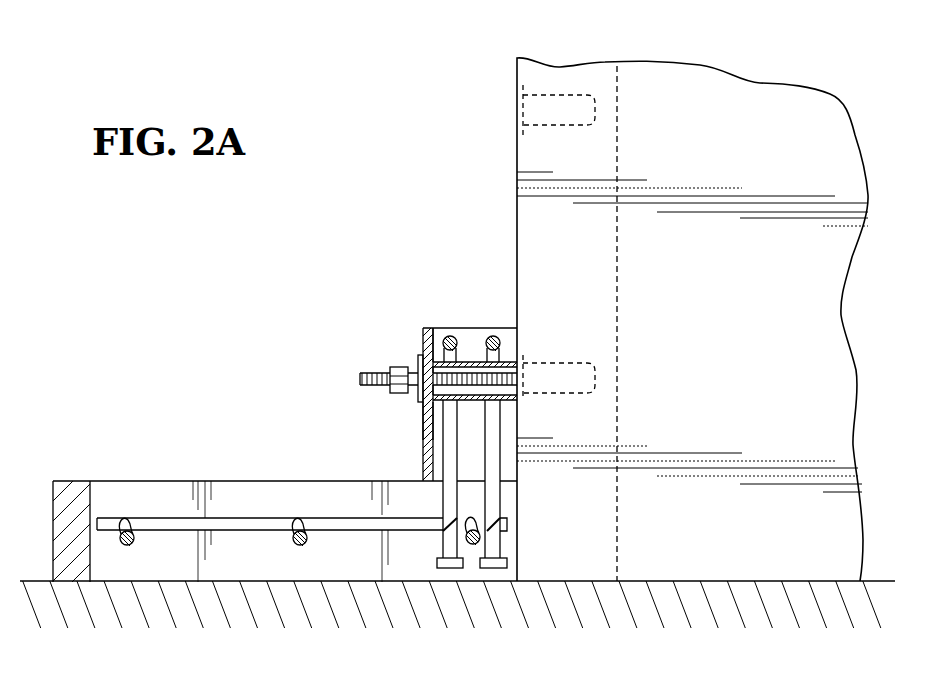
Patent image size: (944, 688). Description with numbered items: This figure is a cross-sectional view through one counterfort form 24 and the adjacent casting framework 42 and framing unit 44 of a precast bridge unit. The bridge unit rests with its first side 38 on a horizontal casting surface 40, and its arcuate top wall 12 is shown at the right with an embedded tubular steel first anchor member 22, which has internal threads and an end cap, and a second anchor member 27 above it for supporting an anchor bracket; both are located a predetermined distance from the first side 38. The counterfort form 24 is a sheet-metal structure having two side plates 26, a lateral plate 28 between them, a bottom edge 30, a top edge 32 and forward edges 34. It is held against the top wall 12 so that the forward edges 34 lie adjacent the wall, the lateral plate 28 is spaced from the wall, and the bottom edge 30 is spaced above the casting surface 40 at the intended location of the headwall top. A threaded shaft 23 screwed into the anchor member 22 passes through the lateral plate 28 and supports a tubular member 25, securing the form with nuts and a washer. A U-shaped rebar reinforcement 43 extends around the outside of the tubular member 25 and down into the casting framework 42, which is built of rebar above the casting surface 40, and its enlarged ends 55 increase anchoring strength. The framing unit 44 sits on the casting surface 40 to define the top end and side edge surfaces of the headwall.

The arcuate top wall 12 is at (594, 80).
The second anchor member 27 is at (553, 95).
The first anchor member 22 is at (548, 363).
The top edge 32 is at (437, 328).
The tubular member 25 is at (472, 360).
The threaded shaft 23 is at (380, 372).
The lateral plate 28 is at (423, 418).
The counterfort form 24 is at (420, 462).
The side plate 26 is at (468, 444).
The rebar reinforcement 43 is at (495, 416).
The bottom edge 30 is at (500, 503).
The forward edge 34 is at (518, 448).
The framing unit 44 is at (143, 490).
The casting framework 42 is at (95, 523).
The enlarged end 55 is at (493, 569).
The horizontal casting surface 40 is at (717, 580).
The first side 38 is at (688, 582).